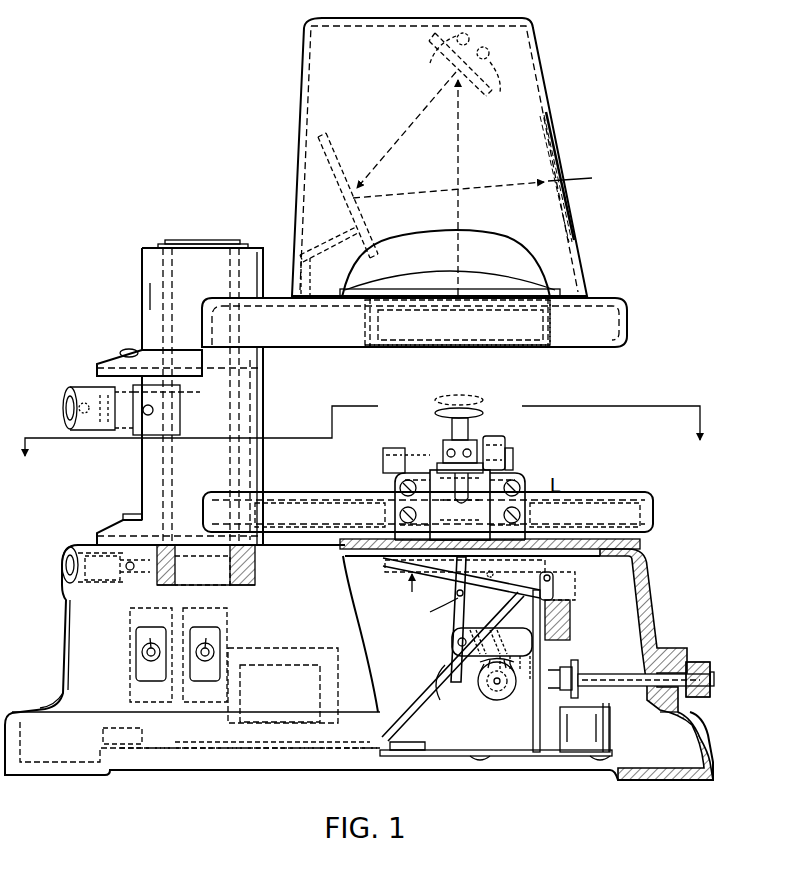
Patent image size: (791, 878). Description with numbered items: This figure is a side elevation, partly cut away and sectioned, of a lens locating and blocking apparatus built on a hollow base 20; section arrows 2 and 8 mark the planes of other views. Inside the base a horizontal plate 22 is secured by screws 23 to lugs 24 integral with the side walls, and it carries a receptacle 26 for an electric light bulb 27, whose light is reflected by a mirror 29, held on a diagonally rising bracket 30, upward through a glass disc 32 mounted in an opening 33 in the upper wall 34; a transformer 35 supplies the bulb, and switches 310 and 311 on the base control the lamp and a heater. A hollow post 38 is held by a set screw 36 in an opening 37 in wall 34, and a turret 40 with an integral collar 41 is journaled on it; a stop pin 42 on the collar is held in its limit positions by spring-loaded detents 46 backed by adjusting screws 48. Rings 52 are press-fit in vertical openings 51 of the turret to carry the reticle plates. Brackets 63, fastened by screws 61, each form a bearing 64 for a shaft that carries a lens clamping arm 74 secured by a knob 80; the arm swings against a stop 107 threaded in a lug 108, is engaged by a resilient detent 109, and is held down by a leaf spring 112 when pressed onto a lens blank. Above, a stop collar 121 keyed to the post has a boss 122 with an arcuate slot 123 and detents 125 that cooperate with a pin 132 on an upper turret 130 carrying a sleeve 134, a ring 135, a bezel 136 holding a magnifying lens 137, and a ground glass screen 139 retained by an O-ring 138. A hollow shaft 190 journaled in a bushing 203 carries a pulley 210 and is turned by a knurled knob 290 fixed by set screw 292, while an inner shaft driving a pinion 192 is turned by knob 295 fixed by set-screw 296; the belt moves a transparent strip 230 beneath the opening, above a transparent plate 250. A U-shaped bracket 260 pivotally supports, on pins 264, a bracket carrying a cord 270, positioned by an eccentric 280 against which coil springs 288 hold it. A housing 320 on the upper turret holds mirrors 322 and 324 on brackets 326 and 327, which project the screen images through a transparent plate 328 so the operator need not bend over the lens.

The section line 2- 2 is at (362, 447).
The section line 8- 8 is at (507, 601).
The hollow base 20 is at (651, 598).
The horizontal plate 22 is at (448, 760).
The screws 23 is at (140, 771).
The lugs 24 is at (100, 712).
The receptacle 26 is at (232, 760).
The electric light bulb 27 is at (240, 642).
The mirror 29 is at (440, 680).
The bracket 30 is at (410, 710).
The glass disc 32 is at (632, 546).
The opening 33 is at (603, 598).
The upper wall 34 is at (350, 570).
The transformer 35 is at (290, 664).
The set screw 36 is at (178, 580).
The opening 37 is at (255, 580).
The hollow trunnion or post 38 is at (190, 240).
The turret 40 is at (578, 494).
The collar portion 41 is at (258, 466).
The stop pin 42 is at (128, 514).
The spring-loaded detent 46 is at (95, 548).
The adjusting screw 48 is at (62, 568).
The vertical openings 51 is at (352, 503).
The ring 52 is at (548, 510).
The screws 61 is at (398, 487).
The bracket 63 is at (400, 478).
The bearing 64 is at (548, 533).
The lens clamping arm 74 is at (460, 478).
The knob 80 is at (472, 410).
The stop 107 is at (510, 455).
The lug 108 is at (497, 440).
The resilient detent 109 is at (390, 475).
The leaf spring 112 is at (458, 488).
The stop collar 121 is at (266, 398).
The boss 122 is at (163, 412).
The arcuate slot 123 is at (122, 432).
The resilient detents 125 is at (174, 390).
The upper turret 130 is at (629, 328).
The pin 132 is at (121, 350).
The sleeve 134 is at (560, 346).
The ring 135 is at (372, 322).
The bezel 136 is at (385, 272).
The magnifying lens 137 is at (482, 278).
The O-ring 138 is at (404, 346).
The ground glass screen 139 is at (466, 336).
The hollow shaft 190 is at (598, 687).
The pinion 192 is at (585, 729).
The bushing 203 is at (652, 660).
The pulley 210 is at (560, 662).
The transparent plastic strip 230 is at (459, 610).
The transparent plate 250 is at (398, 570).
The U-shaped bracket 260 is at (453, 642).
The pins 264 is at (484, 680).
The cord 270 is at (426, 613).
The eccentric 280 is at (478, 695).
The coil springs 288 is at (512, 672).
The knurled knob 290 is at (690, 660).
The set screw 292 is at (680, 705).
The knurled knob 295 is at (715, 678).
The set-screw 296 is at (699, 662).
The switch 310 is at (142, 650).
The switch 311 is at (215, 645).
The housing 320 is at (299, 132).
The mirror 322 is at (358, 215).
The mirror 324 is at (430, 63).
The bracket 326 is at (329, 255).
The bracket 327 is at (503, 90).
The transparent plate 328 is at (573, 202).